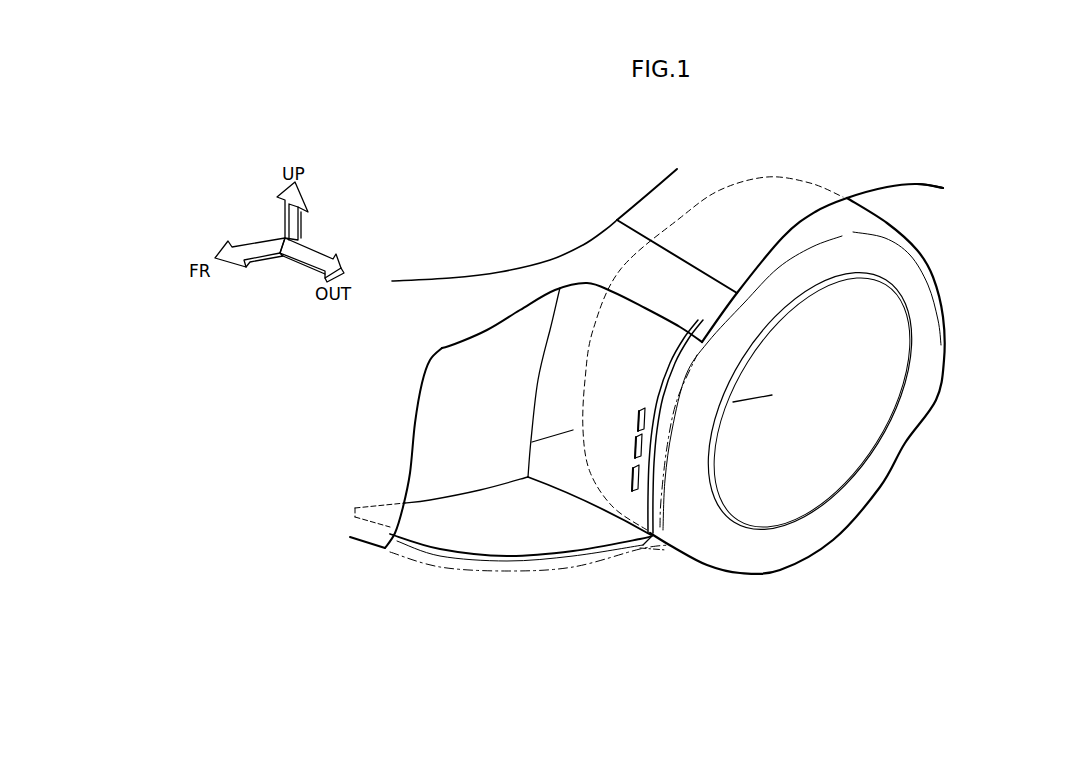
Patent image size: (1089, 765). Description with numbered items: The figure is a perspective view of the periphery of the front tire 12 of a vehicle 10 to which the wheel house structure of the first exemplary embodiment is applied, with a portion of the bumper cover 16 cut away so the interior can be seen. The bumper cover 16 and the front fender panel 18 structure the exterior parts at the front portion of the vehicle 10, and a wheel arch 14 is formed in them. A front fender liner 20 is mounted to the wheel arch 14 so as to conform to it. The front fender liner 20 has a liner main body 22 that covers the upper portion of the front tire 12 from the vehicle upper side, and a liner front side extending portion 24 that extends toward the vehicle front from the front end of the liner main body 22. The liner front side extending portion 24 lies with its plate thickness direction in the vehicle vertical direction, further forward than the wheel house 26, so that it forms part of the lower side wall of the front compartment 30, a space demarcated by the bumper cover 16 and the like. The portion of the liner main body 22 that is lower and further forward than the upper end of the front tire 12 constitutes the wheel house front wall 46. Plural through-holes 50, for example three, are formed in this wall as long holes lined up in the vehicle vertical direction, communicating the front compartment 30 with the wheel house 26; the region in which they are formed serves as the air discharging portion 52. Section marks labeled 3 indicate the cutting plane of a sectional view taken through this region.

The vehicle 10 is at (990, 173).
The front tire 12 is at (913, 440).
The wheel arch 14 is at (862, 198).
The bumper cover 16 is at (382, 490).
The front fender panel 18 is at (914, 160).
The front fender liner 20 is at (645, 549).
The liner main body 22 is at (549, 366).
The liner front side extending portion 24 is at (525, 543).
The wheel house 26 is at (672, 515).
The front compartment 30 is at (504, 450).
The wheel house front wall 46 is at (576, 346).
The through-holes 50 is at (642, 410).
The air discharging portion 52 is at (652, 388).
The section line of FIG. 3 is at (539, 431).